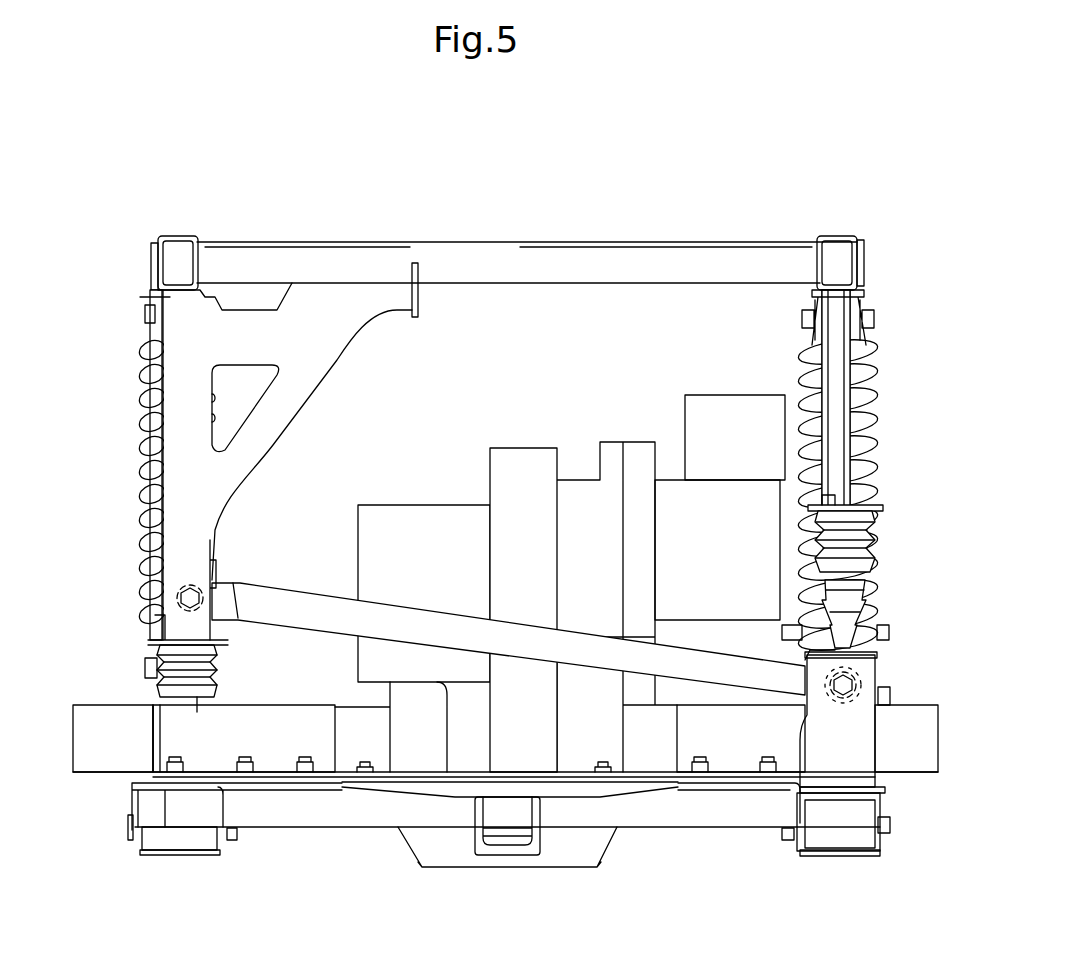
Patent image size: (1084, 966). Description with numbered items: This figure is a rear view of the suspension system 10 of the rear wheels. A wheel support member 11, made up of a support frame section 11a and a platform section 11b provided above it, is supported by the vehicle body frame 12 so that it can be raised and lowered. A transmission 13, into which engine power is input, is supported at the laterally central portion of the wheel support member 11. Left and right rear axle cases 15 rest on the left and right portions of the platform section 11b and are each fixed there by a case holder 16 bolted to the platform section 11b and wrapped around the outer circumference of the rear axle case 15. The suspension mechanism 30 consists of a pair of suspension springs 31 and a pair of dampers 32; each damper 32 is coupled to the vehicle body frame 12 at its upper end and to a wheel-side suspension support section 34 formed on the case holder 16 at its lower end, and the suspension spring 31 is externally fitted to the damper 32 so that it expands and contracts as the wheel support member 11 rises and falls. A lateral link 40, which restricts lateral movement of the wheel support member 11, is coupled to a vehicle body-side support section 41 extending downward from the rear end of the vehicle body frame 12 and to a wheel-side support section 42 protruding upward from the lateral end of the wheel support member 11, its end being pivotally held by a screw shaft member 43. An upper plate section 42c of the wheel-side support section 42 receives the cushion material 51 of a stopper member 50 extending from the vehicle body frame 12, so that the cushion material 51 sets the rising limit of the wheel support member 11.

The suspension system 10 is at (133, 180).
The wheel support member 11 is at (498, 854).
The support frame section 11a is at (358, 826).
The platform section 11b is at (133, 770).
The vehicle body frame 12 is at (543, 243).
The transmission 13 is at (528, 440).
The rear axle case 15 is at (100, 738).
The case holder 16 is at (272, 712).
The suspension mechanism 30 is at (502, 469).
The suspension spring 31 is at (150, 440).
The damper 32 is at (158, 405).
The wheel-side suspension support section 34 is at (158, 727).
The lateral link 40 is at (316, 600).
The vehicle body-side support section 41 is at (297, 380).
The wheel-side support section 42 is at (867, 745).
The upper plate section 42c is at (812, 652).
The screw shaft member 43 is at (862, 666).
The stopper member 50 is at (838, 428).
The cushion material 51 is at (870, 525).